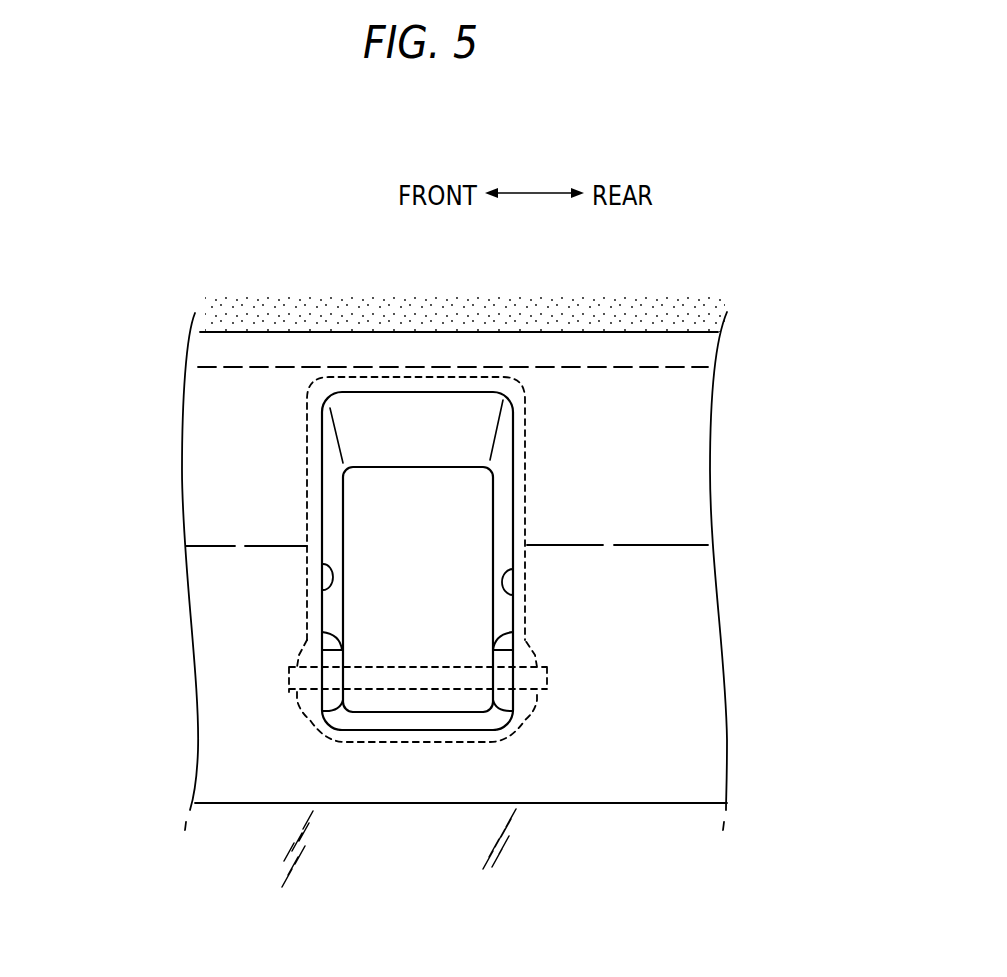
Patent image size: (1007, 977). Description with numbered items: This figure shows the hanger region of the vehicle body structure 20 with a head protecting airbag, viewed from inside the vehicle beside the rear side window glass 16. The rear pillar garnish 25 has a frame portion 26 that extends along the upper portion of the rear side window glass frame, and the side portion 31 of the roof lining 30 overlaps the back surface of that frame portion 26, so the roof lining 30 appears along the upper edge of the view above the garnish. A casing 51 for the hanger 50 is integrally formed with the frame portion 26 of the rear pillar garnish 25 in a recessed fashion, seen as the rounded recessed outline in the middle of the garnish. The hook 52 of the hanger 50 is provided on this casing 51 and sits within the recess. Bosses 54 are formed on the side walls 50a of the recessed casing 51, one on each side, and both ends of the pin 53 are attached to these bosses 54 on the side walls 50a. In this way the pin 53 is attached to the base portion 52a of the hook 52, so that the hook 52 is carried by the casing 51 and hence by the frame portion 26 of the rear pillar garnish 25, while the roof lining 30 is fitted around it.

The rear side window glass 16 is at (253, 840).
The vehicle body structure 20 is at (299, 250).
The rear pillar garnish 25 is at (603, 815).
The frame portion 26 is at (693, 788).
The roof lining 30 is at (235, 302).
The side portion 31 is at (262, 370).
The hanger 50 is at (280, 513).
The side walls 50a is at (322, 590).
The casing 51 is at (480, 427).
The hook 52 is at (477, 510).
The base portion 52a is at (465, 700).
The pin 53 is at (422, 690).
The bosses 54 is at (322, 632).